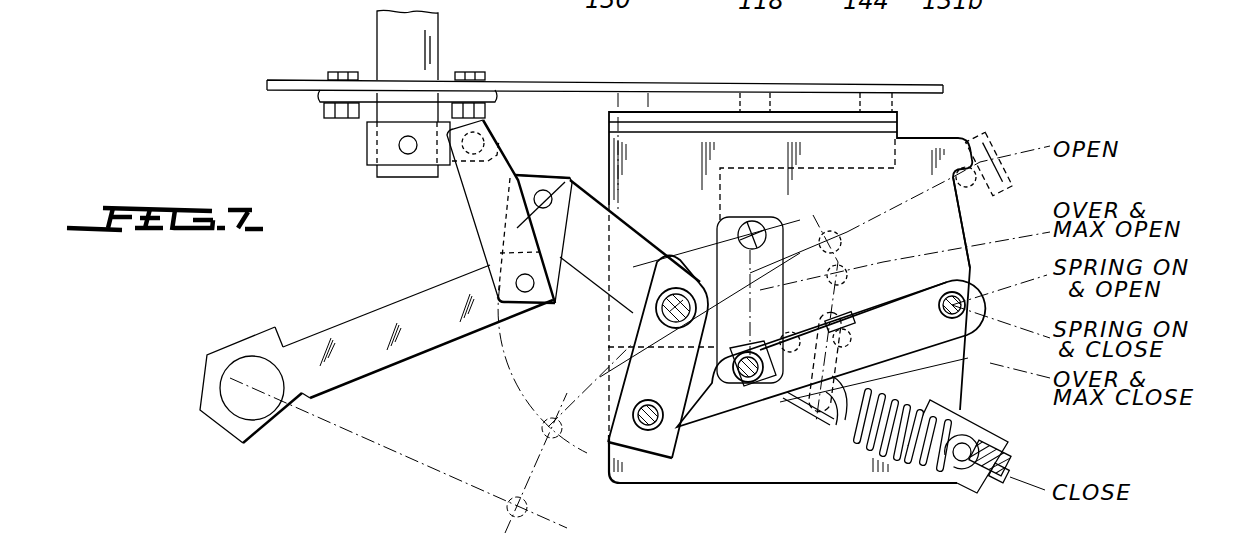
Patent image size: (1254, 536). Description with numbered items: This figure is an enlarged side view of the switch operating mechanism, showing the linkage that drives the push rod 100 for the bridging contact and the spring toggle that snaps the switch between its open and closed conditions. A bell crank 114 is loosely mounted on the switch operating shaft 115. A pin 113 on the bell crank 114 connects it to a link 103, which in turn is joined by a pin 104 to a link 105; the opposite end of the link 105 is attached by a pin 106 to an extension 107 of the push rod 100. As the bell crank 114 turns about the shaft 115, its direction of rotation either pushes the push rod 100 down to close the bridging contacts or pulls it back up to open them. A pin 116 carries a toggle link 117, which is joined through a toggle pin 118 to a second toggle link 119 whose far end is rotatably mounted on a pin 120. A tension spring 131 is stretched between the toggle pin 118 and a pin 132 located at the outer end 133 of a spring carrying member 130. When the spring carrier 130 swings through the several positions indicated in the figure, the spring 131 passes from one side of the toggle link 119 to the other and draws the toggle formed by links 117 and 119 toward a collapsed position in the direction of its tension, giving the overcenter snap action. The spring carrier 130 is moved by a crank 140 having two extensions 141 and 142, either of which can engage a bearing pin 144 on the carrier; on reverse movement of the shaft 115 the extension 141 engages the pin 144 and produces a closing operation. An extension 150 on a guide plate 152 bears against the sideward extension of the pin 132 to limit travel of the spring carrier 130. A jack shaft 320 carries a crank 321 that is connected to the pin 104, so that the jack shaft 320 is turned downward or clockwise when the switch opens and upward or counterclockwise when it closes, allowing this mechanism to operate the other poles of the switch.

The push rod 100 is at (438, 50).
The link 103 is at (570, 203).
The pin 104 is at (528, 293).
The link 105 is at (484, 217).
The pin 106 is at (484, 139).
The extension of the push rod 107 is at (368, 146).
The pin 113 is at (538, 190).
The bell crank 114 is at (643, 233).
The shaft 115 is at (699, 282).
The pin 116 is at (650, 440).
The toggle link 117 is at (712, 417).
The toggle pin 118 is at (750, 382).
The toggle link 119 is at (890, 292).
The pin 120 is at (979, 276).
The spring carrying member 130 is at (967, 493).
The tension spring 131 is at (883, 393).
The pin 132 is at (973, 435).
The outer end of the spring carrying member 133 is at (1003, 448).
The crank 140 is at (842, 316).
The extension 141 is at (813, 413).
The extension 142 is at (925, 310).
The bearing pin 144 is at (836, 405).
The extension 150 is at (947, 138).
The guide plate 152 is at (947, 230).
The jack shaft 320 is at (242, 420).
The crank 321 is at (390, 317).